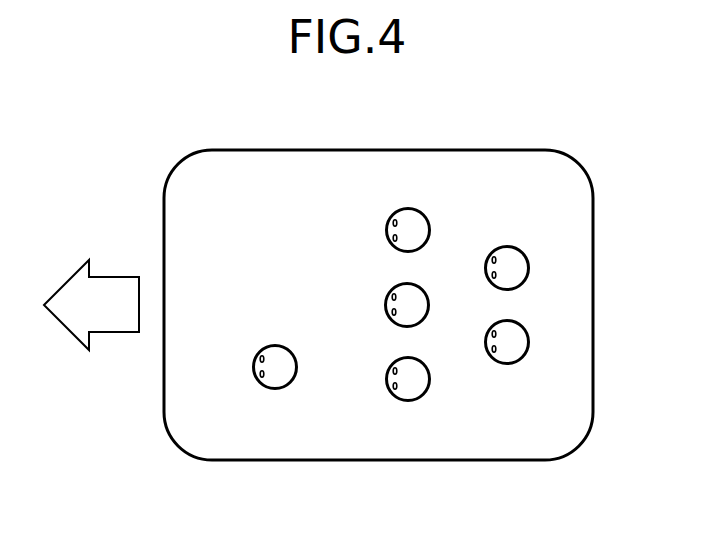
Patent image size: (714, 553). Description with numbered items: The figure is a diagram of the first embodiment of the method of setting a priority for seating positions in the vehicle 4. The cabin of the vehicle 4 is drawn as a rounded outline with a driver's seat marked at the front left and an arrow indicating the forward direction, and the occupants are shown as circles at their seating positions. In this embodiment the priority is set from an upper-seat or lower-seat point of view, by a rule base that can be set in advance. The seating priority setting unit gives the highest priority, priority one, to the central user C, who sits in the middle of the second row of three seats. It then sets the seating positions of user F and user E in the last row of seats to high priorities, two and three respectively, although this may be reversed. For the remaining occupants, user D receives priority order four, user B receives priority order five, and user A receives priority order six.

The vehicle 4 is at (571, 157).
The user A is at (273, 389).
The user B is at (407, 401).
The central user C is at (429, 303).
The user D is at (407, 209).
The user E is at (529, 341).
The user F is at (529, 266).